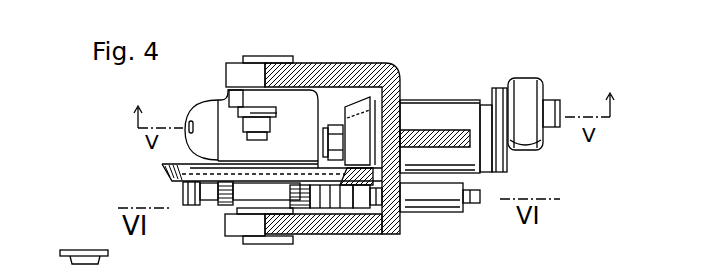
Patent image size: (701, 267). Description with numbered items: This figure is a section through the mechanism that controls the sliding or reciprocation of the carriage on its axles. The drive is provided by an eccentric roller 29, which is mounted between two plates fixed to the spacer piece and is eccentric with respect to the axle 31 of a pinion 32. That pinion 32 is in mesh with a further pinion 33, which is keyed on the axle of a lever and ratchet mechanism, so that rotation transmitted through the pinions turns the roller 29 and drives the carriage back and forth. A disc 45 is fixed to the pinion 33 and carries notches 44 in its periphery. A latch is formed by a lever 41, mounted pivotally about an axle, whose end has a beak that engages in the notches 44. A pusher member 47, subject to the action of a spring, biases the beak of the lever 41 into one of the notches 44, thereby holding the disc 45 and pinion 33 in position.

The eccentric roller 29 is at (528, 84).
The axle 31 is at (326, 137).
The pinion 32 is at (362, 106).
The pinion 33 is at (175, 166).
The lever 41 is at (357, 203).
The notches 44 is at (306, 185).
The disc 45 is at (248, 193).
The pusher member 47 is at (375, 206).